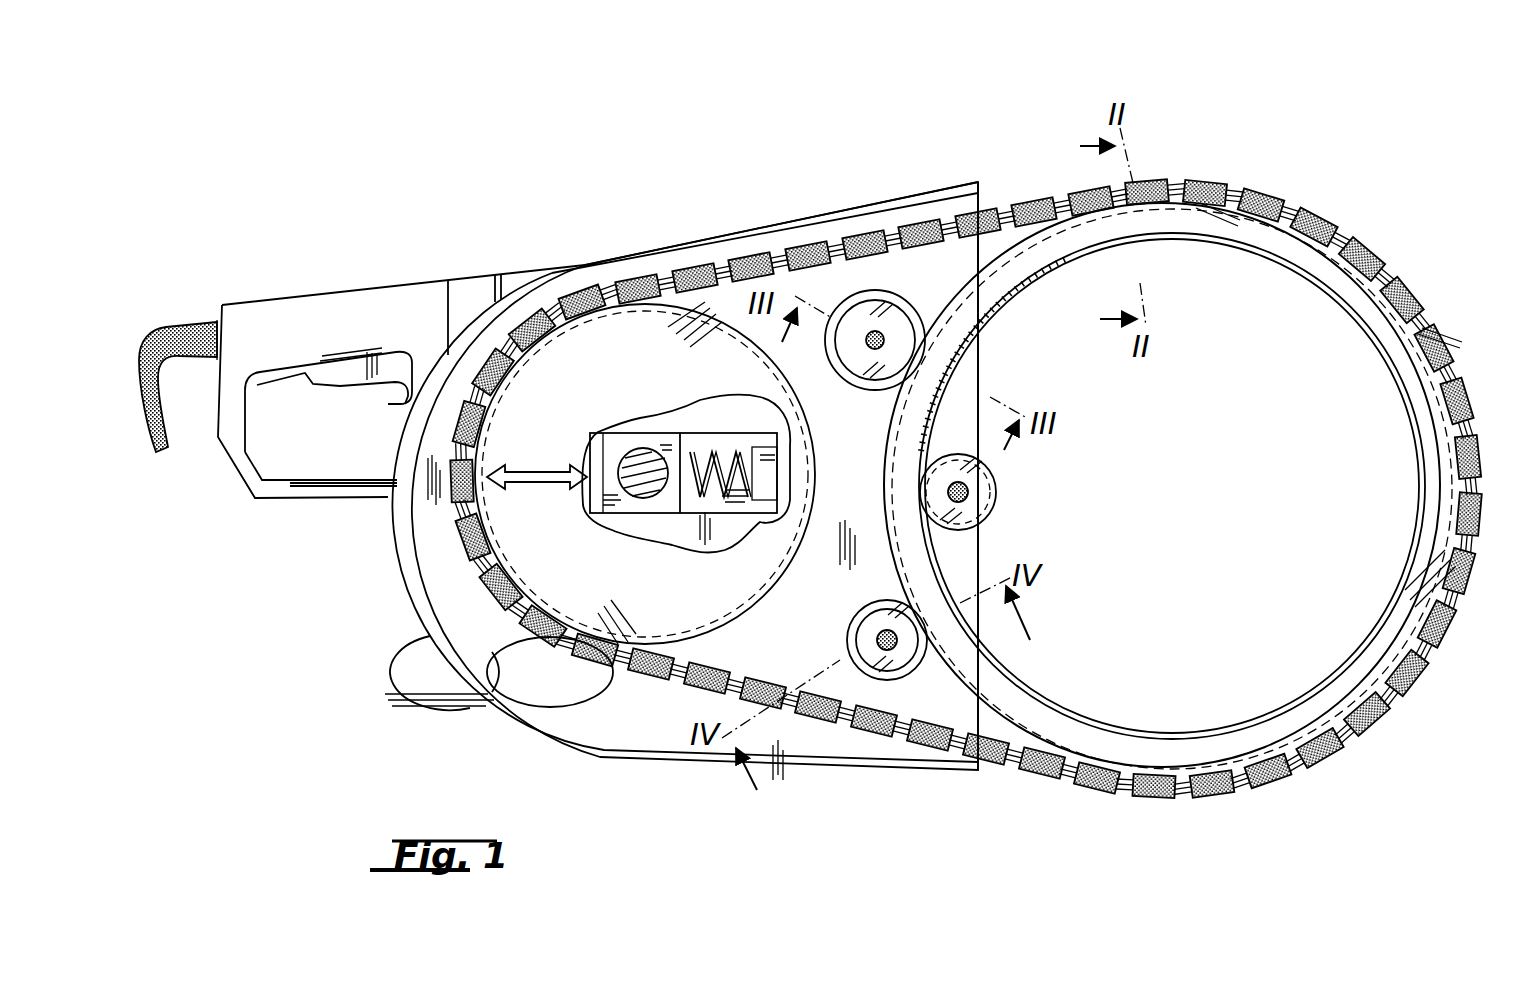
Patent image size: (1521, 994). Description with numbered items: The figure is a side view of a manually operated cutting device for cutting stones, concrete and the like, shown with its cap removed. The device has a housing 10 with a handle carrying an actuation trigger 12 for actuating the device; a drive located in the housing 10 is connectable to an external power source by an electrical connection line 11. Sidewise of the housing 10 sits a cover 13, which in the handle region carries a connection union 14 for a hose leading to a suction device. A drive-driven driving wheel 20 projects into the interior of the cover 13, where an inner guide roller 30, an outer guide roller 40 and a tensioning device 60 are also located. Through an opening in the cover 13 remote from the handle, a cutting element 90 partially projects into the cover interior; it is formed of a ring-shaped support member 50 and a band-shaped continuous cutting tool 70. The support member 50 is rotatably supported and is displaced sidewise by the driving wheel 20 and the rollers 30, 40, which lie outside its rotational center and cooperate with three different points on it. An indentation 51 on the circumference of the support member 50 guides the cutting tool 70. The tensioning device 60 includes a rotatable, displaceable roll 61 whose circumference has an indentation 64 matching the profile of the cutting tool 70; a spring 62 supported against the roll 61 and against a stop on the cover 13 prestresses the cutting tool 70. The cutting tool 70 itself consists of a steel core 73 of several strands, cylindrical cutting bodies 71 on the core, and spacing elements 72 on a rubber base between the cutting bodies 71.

The housing 10 is at (428, 268).
The electrical connection line 11 is at (172, 445).
The actuation trigger 12 is at (330, 372).
The cover 13 is at (637, 262).
The connection union 14 is at (428, 690).
The driving wheel 20 is at (898, 320).
The inner guide roller 30 is at (985, 500).
The outer guide roller 40 is at (866, 635).
The support member 50 is at (1268, 735).
The indentation 51 is at (1307, 728).
The tensioning device 60 is at (667, 428).
The roll 61 is at (731, 384).
The spring 62 is at (730, 500).
The indentation 64 is at (525, 355).
The cutting tool 70 is at (966, 460).
The cutting bodies 71 is at (1362, 256).
The spacing elements 72 is at (1326, 235).
The steel core 73 is at (1260, 192).
The cutting element 90 is at (1233, 170).